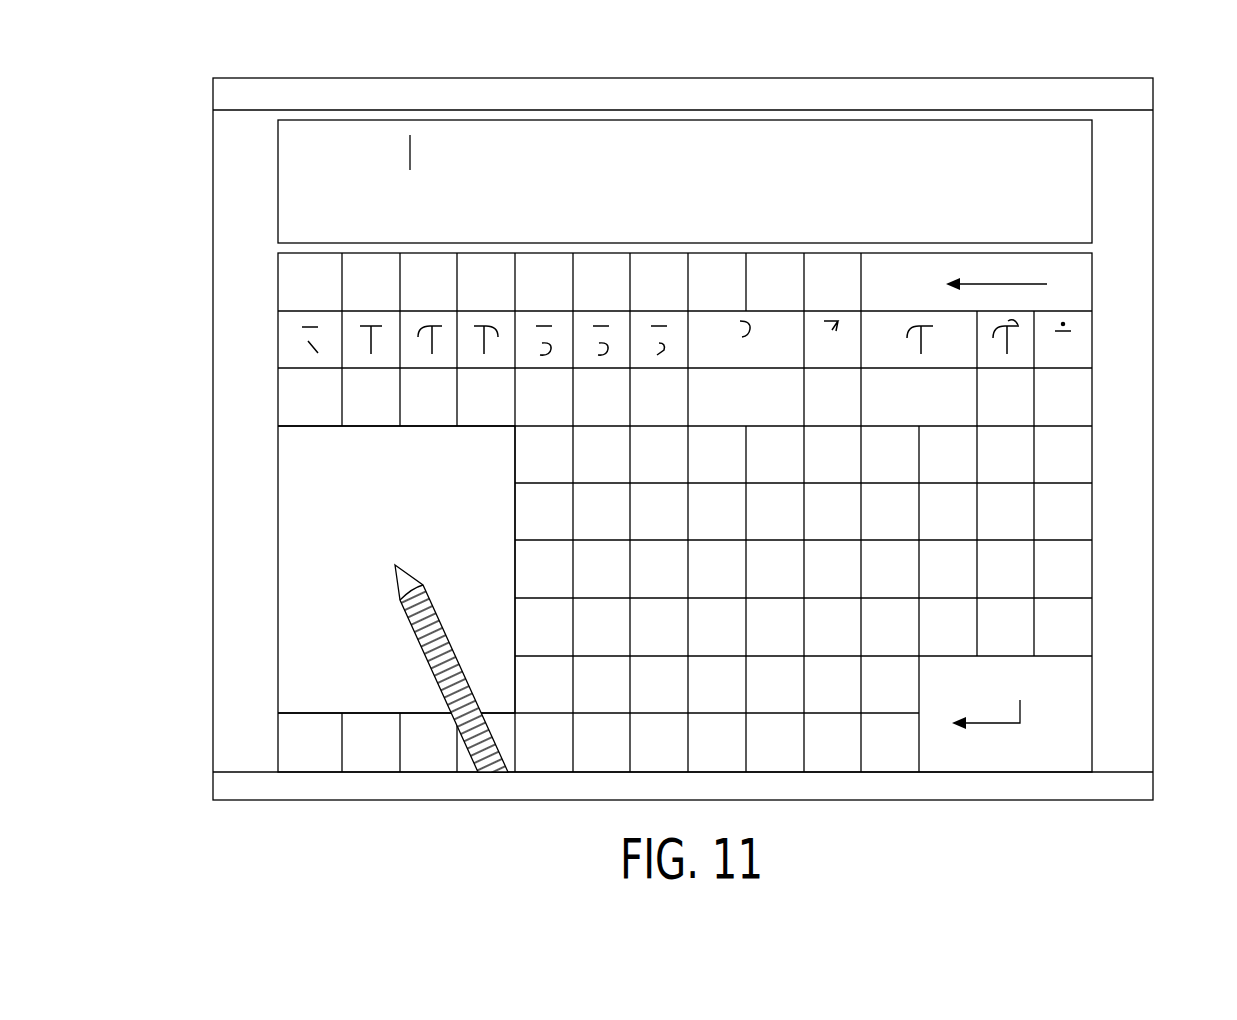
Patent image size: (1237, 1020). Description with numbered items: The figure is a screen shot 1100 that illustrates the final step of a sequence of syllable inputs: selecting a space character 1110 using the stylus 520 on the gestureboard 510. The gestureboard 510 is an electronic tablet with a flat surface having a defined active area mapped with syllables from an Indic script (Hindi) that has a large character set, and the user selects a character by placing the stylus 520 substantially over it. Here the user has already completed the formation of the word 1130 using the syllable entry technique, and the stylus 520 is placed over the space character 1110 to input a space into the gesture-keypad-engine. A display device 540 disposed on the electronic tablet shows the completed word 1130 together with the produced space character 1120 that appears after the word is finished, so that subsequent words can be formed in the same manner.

The screen shot 1100 is at (620, 46).
The space character 1110 is at (357, 537).
The produced space character 1120 is at (400, 160).
The word 1130 is at (335, 138).
The gestureboard 510 is at (1093, 458).
The stylus 520 is at (463, 752).
The display device 540 is at (1093, 193).